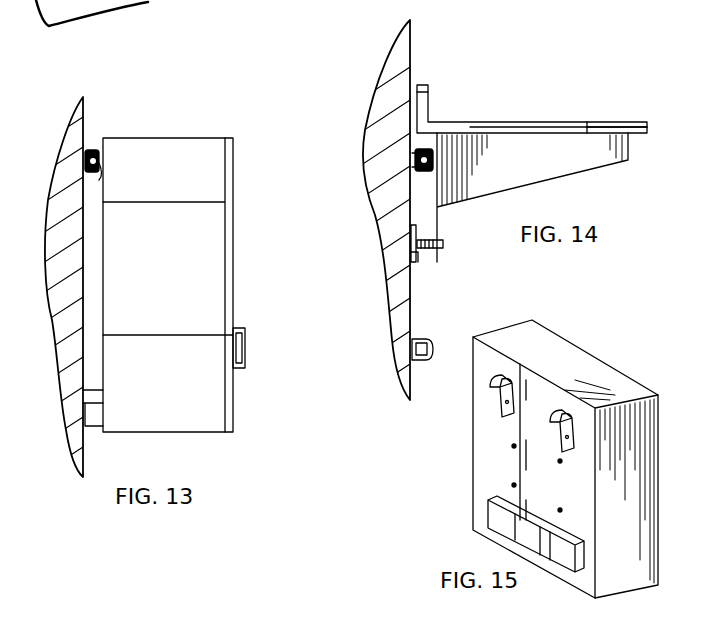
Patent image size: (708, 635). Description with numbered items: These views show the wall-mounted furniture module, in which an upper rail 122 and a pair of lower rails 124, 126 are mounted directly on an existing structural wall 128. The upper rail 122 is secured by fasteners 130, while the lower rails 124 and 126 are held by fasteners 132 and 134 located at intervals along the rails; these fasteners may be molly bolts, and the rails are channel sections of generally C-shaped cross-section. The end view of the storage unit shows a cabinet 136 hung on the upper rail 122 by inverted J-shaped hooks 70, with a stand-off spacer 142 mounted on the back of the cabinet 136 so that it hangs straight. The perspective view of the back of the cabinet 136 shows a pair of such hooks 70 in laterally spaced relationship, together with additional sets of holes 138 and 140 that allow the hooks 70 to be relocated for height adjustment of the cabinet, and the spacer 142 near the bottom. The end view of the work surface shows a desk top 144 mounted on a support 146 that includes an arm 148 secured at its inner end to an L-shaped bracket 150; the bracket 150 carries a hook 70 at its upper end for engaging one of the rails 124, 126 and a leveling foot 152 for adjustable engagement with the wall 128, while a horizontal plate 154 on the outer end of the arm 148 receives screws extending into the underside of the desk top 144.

In FIG. 13, the inverted J-shaped hook 70 is at (100, 176).
In FIG. 14, the inverted J-shaped hook 70 is at (431, 174).
In FIG. 15, the inverted J-shaped hook 70 is at (489, 382).
In FIG. 13, the upper rail 122 is at (93, 149).
In FIG. 14, the lower rail 124 is at (410, 152).
In FIG. 14, the lower rail 126 is at (432, 349).
In FIG. 13, the wall 128 is at (78, 114).
In FIG. 14, the wall 128 is at (413, 48).
In FIG. 13, the fastener 130 is at (82, 152).
In FIG. 14, the fastener 132 is at (413, 158).
In FIG. 14, the fastener 134 is at (406, 348).
In FIG. 13, the cabinet 136 is at (198, 136).
In FIG. 15, the cabinet 136 is at (596, 356).
In FIG. 15, the holes 138 is at (513, 444).
In FIG. 15, the holes 140 is at (513, 485).
In FIG. 13, the stand-off spacer 142 is at (92, 416).
In FIG. 15, the stand-off spacer 142 is at (505, 525).
In FIG. 14, the desk top 144 is at (558, 119).
In FIG. 14, the support 146 is at (606, 170).
In FIG. 14, the arm 148 is at (541, 168).
In FIG. 14, the L-shaped bracket 150 is at (445, 232).
In FIG. 14, the leveling foot 152 is at (424, 259).
In FIG. 14, the horizontal plate 154 is at (623, 141).